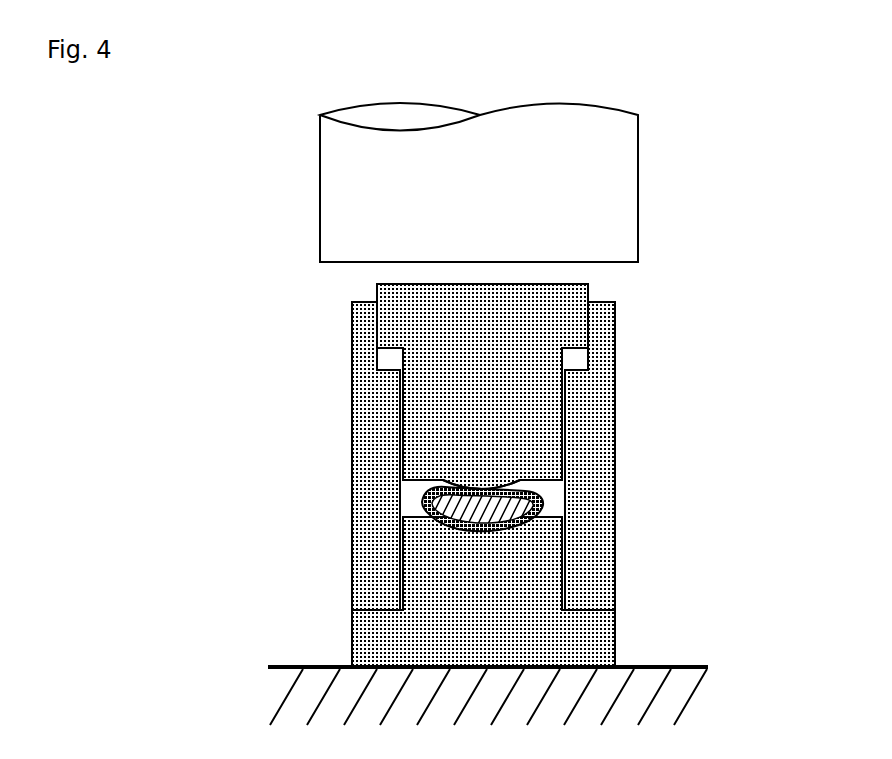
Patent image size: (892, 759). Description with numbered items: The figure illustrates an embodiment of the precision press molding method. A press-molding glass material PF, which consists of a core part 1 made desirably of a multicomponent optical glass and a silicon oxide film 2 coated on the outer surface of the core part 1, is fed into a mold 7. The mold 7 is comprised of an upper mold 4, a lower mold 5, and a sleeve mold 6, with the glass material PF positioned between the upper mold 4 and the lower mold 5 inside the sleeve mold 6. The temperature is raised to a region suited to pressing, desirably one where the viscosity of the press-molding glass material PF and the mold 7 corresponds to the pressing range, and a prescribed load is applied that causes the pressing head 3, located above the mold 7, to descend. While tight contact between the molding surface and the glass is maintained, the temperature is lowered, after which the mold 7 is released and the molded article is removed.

The core part 1 is at (507, 481).
The silicon oxide film 2 is at (542, 512).
The pressing head 3 is at (372, 205).
The upper mold 4 is at (445, 393).
The lower mold 5 is at (442, 562).
The sleeve mold 6 is at (375, 481).
The mold 7 is at (361, 475).
The press-molding glass material PF is at (768, 423).